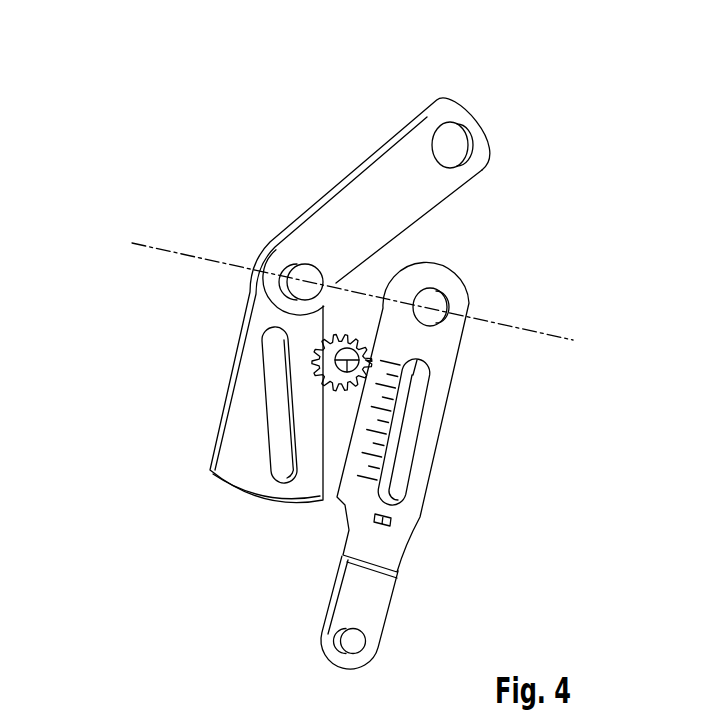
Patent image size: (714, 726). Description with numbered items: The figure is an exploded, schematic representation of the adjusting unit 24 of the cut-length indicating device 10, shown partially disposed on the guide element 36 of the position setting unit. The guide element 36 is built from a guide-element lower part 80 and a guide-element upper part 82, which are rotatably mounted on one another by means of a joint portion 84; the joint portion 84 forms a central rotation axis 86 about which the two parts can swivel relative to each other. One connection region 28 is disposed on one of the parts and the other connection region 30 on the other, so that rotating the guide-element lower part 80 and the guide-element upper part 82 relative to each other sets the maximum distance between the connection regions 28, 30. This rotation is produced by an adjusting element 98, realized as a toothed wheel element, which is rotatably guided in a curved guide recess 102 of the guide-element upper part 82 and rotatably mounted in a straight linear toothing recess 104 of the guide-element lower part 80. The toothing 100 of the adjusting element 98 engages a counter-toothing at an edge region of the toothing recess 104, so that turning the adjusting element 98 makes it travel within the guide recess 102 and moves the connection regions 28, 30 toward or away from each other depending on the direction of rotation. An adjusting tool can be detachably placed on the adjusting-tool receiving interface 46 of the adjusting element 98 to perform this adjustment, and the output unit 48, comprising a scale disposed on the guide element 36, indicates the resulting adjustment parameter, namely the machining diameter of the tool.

The cut-length indicating device 10 is at (103, 117).
The adjusting unit 24 is at (314, 282).
The connection region 28 is at (465, 158).
The connection region 30 is at (360, 646).
The guide element 36 is at (369, 282).
The adjusting-tool receiving interface 46 is at (274, 373).
The output unit 48 is at (326, 544).
The guide-element lower part 80 is at (380, 472).
The guide-element upper part 82 is at (353, 198).
The joint portion 84 is at (305, 272).
The central rotation axis 86 is at (546, 331).
The adjusting element 98 is at (320, 355).
The toothing 100 is at (322, 381).
The guide recess 102 is at (262, 422).
The toothing recess 104 is at (407, 455).